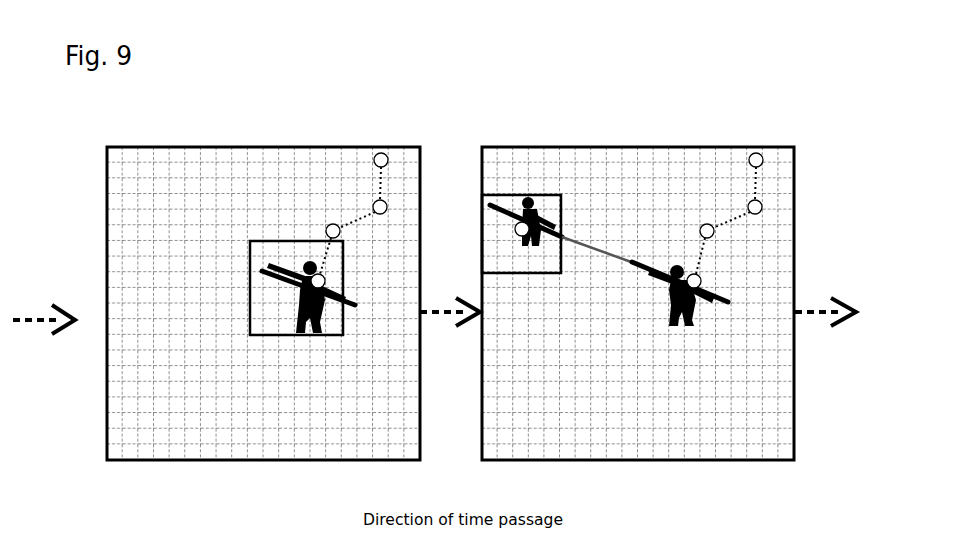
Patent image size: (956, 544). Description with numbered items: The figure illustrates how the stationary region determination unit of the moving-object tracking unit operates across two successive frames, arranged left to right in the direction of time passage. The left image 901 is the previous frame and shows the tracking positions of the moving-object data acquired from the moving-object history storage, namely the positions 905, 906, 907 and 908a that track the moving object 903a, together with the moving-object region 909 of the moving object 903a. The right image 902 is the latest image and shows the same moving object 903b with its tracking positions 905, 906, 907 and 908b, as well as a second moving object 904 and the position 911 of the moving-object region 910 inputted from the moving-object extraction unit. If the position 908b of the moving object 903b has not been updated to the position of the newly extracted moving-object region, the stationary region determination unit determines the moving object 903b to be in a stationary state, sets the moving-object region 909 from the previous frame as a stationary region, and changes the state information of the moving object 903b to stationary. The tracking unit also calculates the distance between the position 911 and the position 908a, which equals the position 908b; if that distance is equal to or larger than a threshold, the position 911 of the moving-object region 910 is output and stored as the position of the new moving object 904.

The image 901 is at (358, 148).
The image 902 is at (731, 148).
The moving object 903a is at (302, 271).
The moving object 903b is at (676, 270).
The moving object 904 is at (524, 197).
The position 905 is at (375, 166).
The position 906 is at (385, 212).
The position 907 is at (327, 230).
The position 908a is at (326, 280).
The position 908b is at (701, 283).
The moving-object region 909 is at (344, 330).
The moving-object region 910 is at (560, 210).
The position 911 is at (516, 233).